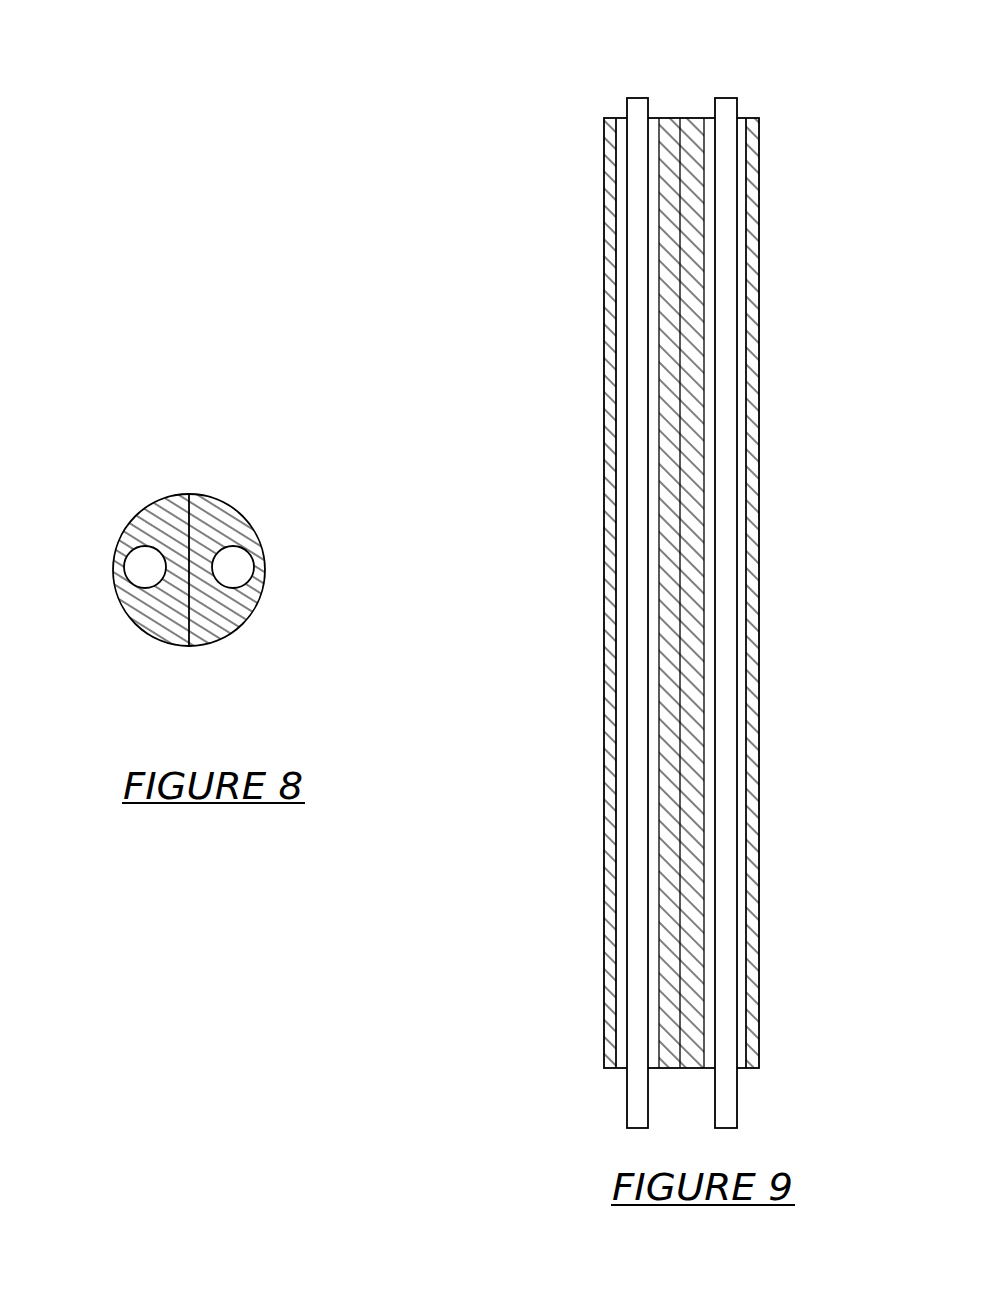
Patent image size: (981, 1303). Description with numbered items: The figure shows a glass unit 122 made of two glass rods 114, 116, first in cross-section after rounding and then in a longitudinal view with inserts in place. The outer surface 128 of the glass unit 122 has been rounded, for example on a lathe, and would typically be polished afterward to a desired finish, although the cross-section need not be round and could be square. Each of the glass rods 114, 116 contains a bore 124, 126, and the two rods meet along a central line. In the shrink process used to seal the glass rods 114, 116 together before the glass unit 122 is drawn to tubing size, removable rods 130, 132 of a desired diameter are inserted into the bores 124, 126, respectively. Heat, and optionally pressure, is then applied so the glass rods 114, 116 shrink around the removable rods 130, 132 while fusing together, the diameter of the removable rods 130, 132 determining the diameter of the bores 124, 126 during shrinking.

In FIG. 8, the glass rod 114 is at (148, 630).
In FIG. 9, the glass rod 114 is at (606, 200).
In FIG. 8, the glass rod 116 is at (232, 633).
In FIG. 9, the glass rod 116 is at (757, 230).
In FIG. 8, the glass unit 122 is at (231, 490).
In FIG. 9, the glass unit 122 is at (765, 330).
In FIG. 8, the bore 124 is at (143, 563).
In FIG. 9, the bore 124 is at (603, 423).
In FIG. 8, the bore 126 is at (235, 565).
In FIG. 9, the bore 126 is at (747, 443).
In FIG. 8, the outer surface 128 is at (131, 522).
In FIG. 9, the removable rod 130 is at (623, 110).
In FIG. 9, the removable rod 132 is at (742, 110).